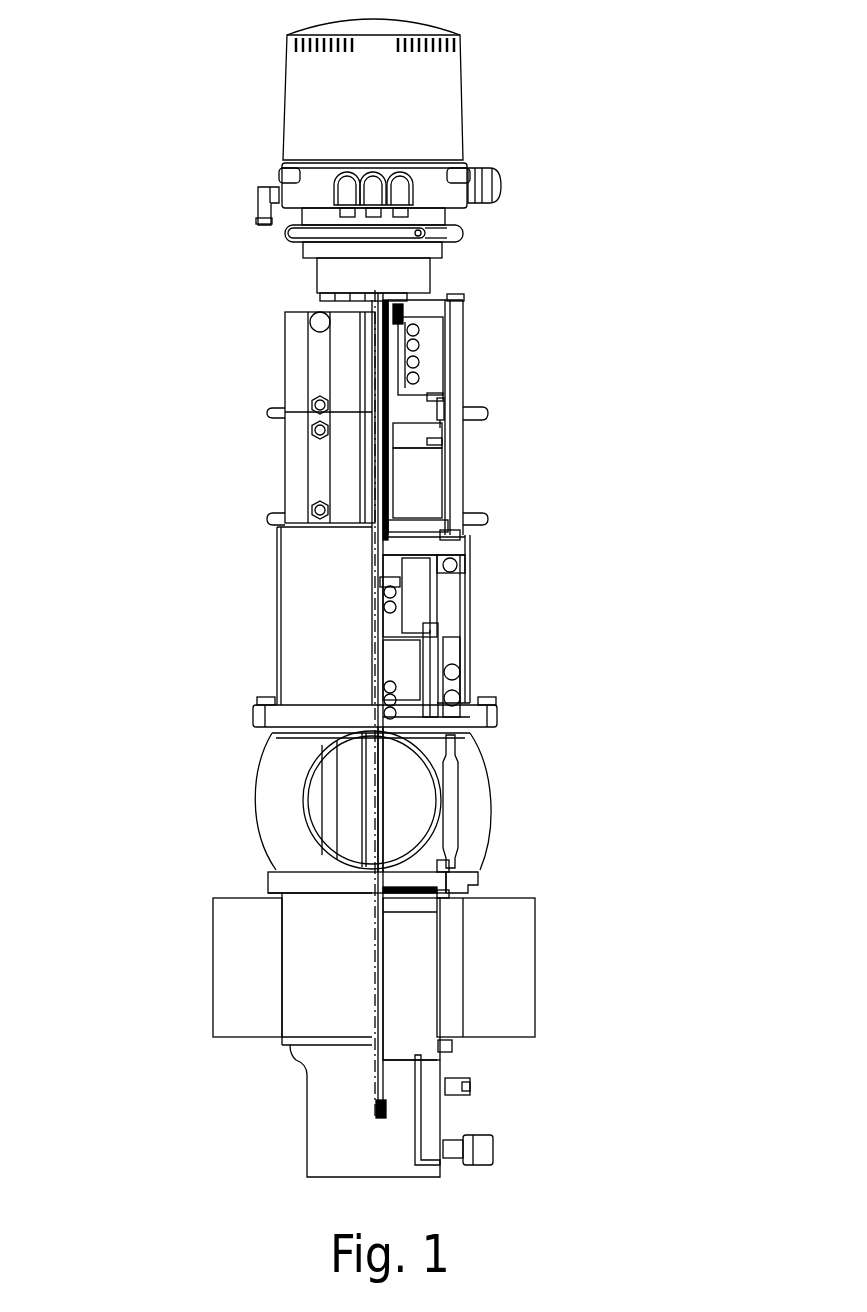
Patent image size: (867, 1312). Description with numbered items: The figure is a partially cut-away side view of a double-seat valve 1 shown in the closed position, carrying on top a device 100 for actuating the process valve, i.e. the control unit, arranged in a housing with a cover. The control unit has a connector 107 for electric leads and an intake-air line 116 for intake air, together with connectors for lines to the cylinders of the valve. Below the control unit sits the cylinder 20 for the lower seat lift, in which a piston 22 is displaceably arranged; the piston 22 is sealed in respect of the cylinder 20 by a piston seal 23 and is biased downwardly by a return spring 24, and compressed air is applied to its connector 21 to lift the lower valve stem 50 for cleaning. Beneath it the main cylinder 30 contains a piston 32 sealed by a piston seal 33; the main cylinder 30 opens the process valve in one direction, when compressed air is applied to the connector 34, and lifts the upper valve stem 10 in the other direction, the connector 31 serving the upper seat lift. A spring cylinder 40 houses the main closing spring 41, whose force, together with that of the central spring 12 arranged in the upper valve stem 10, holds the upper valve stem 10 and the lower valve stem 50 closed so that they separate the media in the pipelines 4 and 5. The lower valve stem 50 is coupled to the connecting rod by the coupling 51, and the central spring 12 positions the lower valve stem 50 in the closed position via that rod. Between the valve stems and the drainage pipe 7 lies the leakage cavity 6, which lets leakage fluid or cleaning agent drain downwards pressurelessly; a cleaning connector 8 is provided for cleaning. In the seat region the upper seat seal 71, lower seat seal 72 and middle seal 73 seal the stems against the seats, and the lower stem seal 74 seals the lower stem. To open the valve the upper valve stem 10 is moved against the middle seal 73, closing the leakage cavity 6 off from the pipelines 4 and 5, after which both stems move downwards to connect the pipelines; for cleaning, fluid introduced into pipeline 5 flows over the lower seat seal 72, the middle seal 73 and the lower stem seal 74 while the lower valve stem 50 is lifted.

The double-seat valve 1 is at (140, 497).
The device for actuating 100 is at (508, 90).
The intake-air line 116 is at (257, 200).
The connector for electric leads 107 is at (492, 182).
The cylinder 20 is at (447, 330).
The return spring 24 is at (420, 345).
The piston 22 is at (432, 390).
The piston seal 23 is at (437, 398).
The connector 21 is at (313, 405).
The piston seal 33 is at (437, 440).
The piston 32 is at (407, 445).
The main cylinder 30 is at (447, 470).
The connector 34 is at (313, 432).
The connector 31 is at (313, 508).
The main closing spring 41 is at (452, 563).
The spring cylinder 40 is at (470, 612).
The central spring 12 is at (395, 605).
The upper valve stem 10 is at (385, 765).
The pipeline 4 is at (413, 819).
The upper seat seal 71 is at (440, 865).
The middle seal 73 is at (445, 880).
The lower seat seal 72 is at (440, 895).
The lower valve stem 50 is at (437, 947).
The pipeline 5 is at (256, 981).
The leakage cavity 6 is at (418, 999).
The lower stem seal 74 is at (445, 1045).
The drainage pipe 7 is at (443, 1093).
The coupling 51 is at (385, 1118).
The cleaning connector 8 is at (480, 1146).